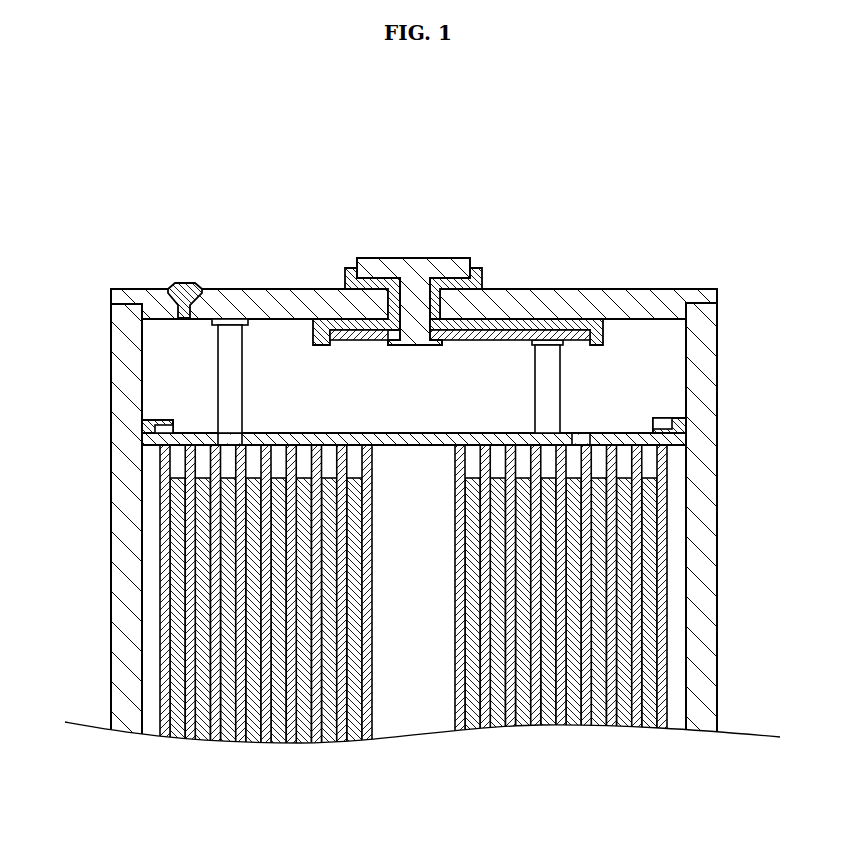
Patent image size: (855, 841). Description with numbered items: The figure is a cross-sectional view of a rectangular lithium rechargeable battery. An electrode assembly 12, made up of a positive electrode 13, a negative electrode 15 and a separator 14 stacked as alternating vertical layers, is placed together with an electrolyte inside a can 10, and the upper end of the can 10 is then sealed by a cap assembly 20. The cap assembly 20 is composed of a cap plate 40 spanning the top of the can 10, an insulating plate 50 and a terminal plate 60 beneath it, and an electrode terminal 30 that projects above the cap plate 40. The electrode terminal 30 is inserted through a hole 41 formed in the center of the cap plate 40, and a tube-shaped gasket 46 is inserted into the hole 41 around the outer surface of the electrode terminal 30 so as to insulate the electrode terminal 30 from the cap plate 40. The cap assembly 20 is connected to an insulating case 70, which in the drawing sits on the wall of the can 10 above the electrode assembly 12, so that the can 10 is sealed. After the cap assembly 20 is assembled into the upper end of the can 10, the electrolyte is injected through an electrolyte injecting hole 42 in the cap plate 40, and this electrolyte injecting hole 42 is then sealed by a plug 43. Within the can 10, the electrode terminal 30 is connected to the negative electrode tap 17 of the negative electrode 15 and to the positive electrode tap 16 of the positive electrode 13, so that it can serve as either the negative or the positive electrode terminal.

The can 10 is at (705, 609).
The electrode assembly 12 is at (488, 634).
The positive electrode 13 is at (645, 725).
The separator 14 is at (658, 728).
The negative electrode 15 is at (622, 725).
The positive electrode tap 16 is at (227, 357).
The negative electrode tap 17 is at (550, 402).
The cap assembly 20 is at (459, 249).
The electrode terminal 30 is at (414, 268).
The cap plate 40 is at (608, 300).
The hole 41 is at (378, 300).
The electrolyte injecting hole 42 is at (160, 289).
The plug 43 is at (188, 283).
The gasket 46 is at (345, 279).
The insulating plate 50 is at (542, 323).
The terminal plate 60 is at (500, 323).
The insulating case 70 is at (197, 430).